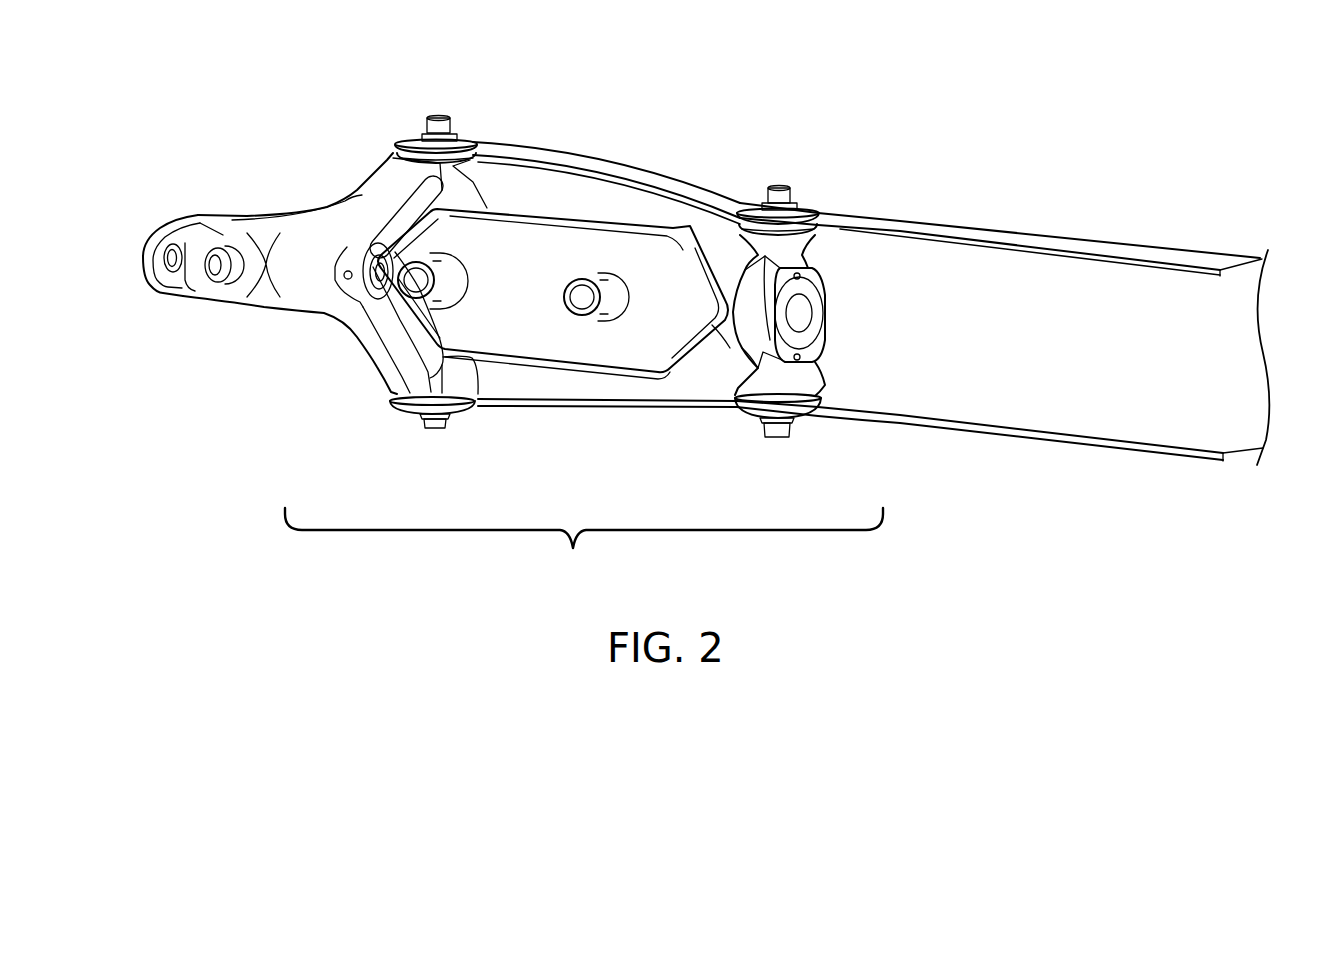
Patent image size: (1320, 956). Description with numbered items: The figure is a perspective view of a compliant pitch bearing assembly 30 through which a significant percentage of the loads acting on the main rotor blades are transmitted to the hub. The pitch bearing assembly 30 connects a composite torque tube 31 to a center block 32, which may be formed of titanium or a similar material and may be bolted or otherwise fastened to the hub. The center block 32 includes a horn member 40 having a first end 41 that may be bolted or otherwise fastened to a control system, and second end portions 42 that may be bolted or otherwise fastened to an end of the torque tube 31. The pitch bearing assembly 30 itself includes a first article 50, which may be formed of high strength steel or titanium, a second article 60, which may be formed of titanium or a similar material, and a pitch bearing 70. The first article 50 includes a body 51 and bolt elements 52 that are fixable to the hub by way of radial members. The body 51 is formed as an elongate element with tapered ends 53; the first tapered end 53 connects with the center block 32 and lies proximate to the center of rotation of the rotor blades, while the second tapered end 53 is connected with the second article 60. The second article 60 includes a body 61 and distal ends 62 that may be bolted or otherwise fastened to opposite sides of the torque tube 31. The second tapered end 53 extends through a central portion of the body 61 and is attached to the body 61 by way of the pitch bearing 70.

The pitch bearing assembly 30 is at (584, 545).
The composite torque tube 31 is at (980, 228).
The center block 32 is at (283, 215).
The horn member 40 is at (320, 306).
The first end 41 is at (182, 291).
The second end portions 42 is at (437, 117).
The first article 50 is at (521, 246).
The body 51 is at (624, 355).
The bolt elements 52 is at (452, 290).
The tapered ends 53 is at (390, 257).
The second article 60 is at (779, 258).
The body 61 is at (765, 357).
The distal ends 62 is at (752, 210).
The pitch bearing 70 is at (826, 316).